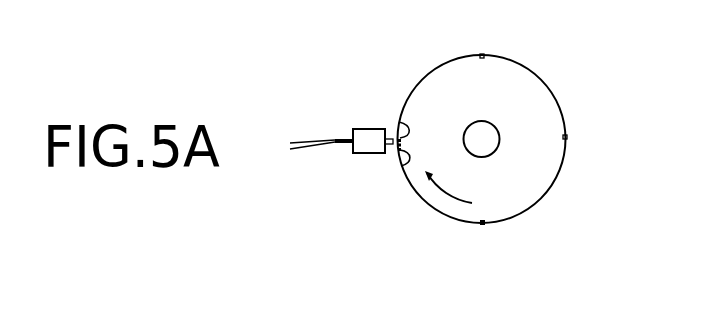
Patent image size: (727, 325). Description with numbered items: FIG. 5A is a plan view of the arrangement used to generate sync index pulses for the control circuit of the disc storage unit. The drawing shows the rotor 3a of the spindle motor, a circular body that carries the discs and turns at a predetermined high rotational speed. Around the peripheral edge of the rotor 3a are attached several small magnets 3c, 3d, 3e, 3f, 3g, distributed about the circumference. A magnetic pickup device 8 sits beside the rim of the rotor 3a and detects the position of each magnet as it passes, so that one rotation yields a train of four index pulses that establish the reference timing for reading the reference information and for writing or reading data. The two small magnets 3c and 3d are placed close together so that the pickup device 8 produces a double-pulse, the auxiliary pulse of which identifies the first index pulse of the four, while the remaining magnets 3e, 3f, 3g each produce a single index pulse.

The rotor 3a is at (552, 95).
The small magnet 3c is at (402, 124).
The small magnet 3d is at (404, 165).
The small magnet 3e is at (483, 225).
The small magnet 3f is at (567, 137).
The small magnet 3g is at (482, 54).
The magnetic pickup device 8 is at (363, 128).